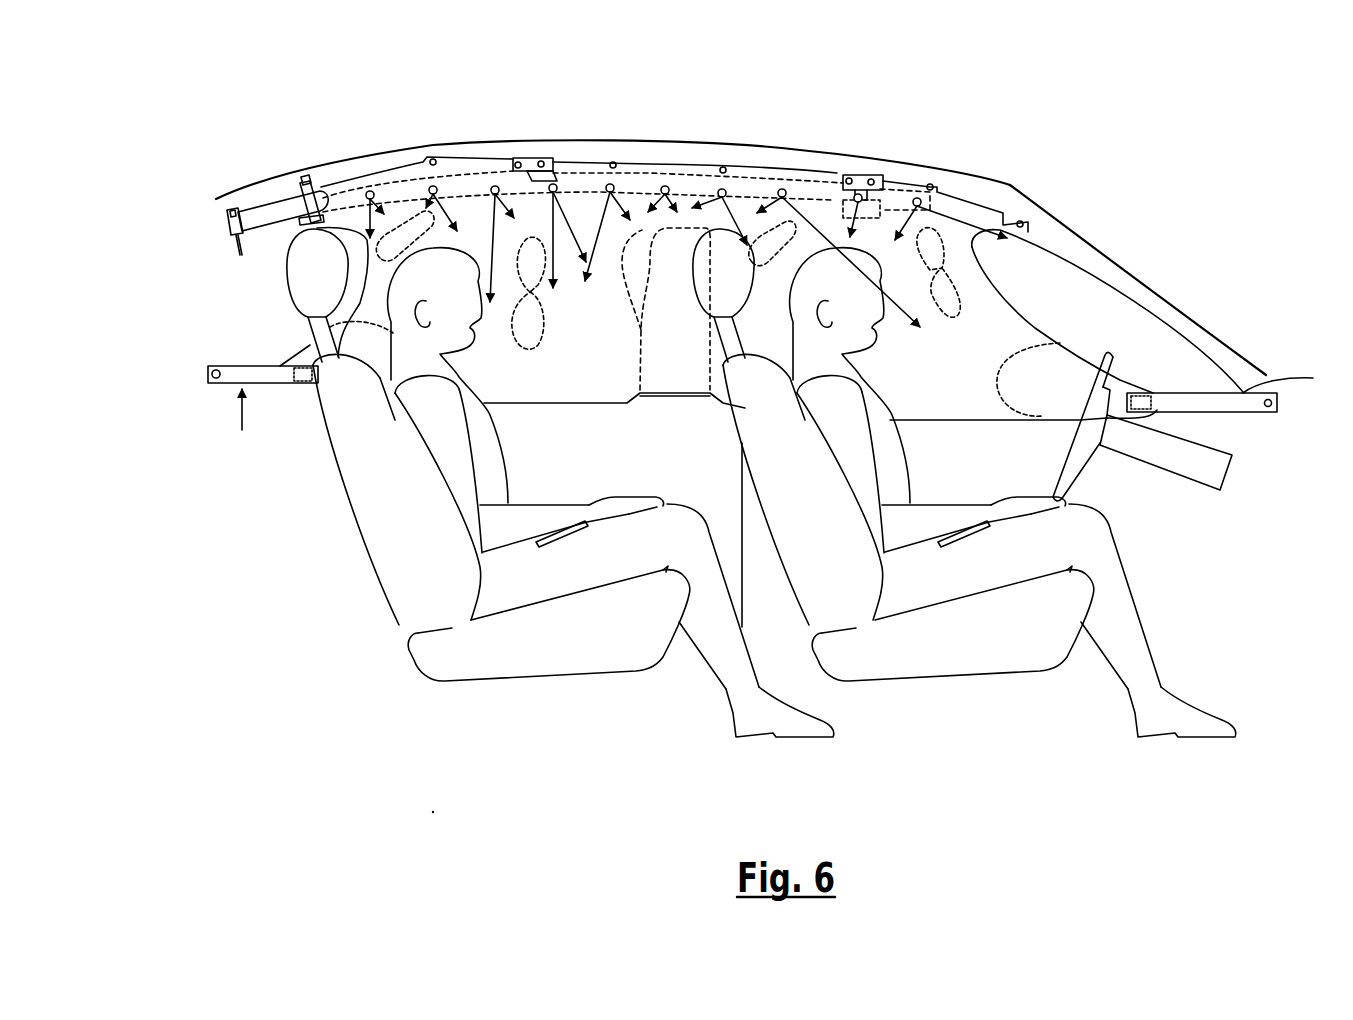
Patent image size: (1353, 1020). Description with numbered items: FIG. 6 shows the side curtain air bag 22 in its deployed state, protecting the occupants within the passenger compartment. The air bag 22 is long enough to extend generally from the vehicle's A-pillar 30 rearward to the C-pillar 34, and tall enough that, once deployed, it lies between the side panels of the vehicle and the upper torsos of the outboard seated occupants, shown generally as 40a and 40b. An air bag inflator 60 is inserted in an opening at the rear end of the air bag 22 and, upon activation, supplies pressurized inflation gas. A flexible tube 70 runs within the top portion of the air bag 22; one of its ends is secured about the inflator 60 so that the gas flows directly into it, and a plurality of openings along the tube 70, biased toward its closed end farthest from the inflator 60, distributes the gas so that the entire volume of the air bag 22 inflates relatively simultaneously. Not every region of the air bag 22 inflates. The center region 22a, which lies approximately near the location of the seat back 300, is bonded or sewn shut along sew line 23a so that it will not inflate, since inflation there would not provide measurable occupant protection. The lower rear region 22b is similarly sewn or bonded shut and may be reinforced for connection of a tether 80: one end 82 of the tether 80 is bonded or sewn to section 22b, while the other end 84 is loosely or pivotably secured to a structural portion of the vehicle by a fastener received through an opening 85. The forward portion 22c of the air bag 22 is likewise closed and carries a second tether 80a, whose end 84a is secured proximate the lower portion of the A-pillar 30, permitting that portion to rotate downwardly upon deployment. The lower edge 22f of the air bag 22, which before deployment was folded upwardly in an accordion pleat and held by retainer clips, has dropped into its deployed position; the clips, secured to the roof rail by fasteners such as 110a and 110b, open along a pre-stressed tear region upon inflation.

The air bag 22 is at (968, 218).
The center of the air bag 22a is at (648, 243).
The lower left-hand region of the air bag 22b is at (297, 352).
The forward portion of the air bag 22c is at (1117, 377).
The lower edge of the air bag 22f is at (589, 392).
The sew line 23a is at (636, 304).
The A-pillar 30 is at (1197, 332).
The C-pillar 34 is at (258, 193).
The outboard seated occupant 40a is at (893, 457).
The outboard seated occupant 40b is at (473, 428).
The air bag inflator 60 is at (275, 207).
The flexible tube 70 is at (344, 196).
The tether 80 is at (243, 426).
The second tether 80a is at (1220, 413).
The end of tether 82 is at (296, 383).
The end of tether 84 is at (212, 385).
The end of second tether 84a is at (1260, 413).
The opening 85 is at (208, 366).
The fastener 110a is at (528, 162).
The fastener 110b is at (870, 176).
The seat back 300 is at (773, 480).